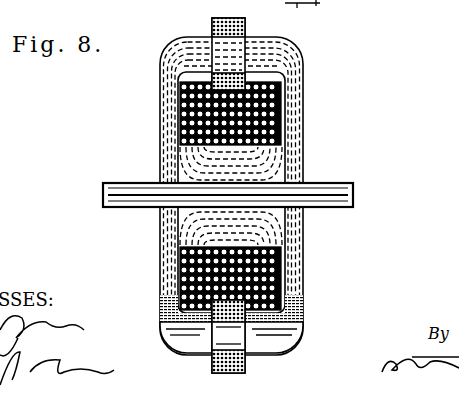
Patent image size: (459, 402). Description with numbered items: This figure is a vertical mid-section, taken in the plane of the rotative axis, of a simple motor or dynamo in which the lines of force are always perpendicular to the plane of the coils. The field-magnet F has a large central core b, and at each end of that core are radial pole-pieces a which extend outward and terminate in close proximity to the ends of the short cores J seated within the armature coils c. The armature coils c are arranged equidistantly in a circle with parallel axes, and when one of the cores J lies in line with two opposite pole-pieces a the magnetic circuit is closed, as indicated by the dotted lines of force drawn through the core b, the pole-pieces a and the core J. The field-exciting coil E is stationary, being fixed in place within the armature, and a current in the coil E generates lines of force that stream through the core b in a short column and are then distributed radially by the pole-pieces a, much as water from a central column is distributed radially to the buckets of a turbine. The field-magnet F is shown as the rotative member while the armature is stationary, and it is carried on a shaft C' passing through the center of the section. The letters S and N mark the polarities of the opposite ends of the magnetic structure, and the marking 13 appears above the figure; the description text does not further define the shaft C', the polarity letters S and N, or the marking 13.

The radial pole-pieces a is at (231, 196).
The armature coils c is at (231, 18).
The field-exciting coil E is at (275, 124).
The central core b is at (231, 261).
The field-magnet F is at (163, 172).
The shaft C' is at (228, 186).
The short core J is at (228, 335).
The south pole S is at (186, 186).
The north pole N is at (274, 187).
The section line indicator 13 is at (302, 18).